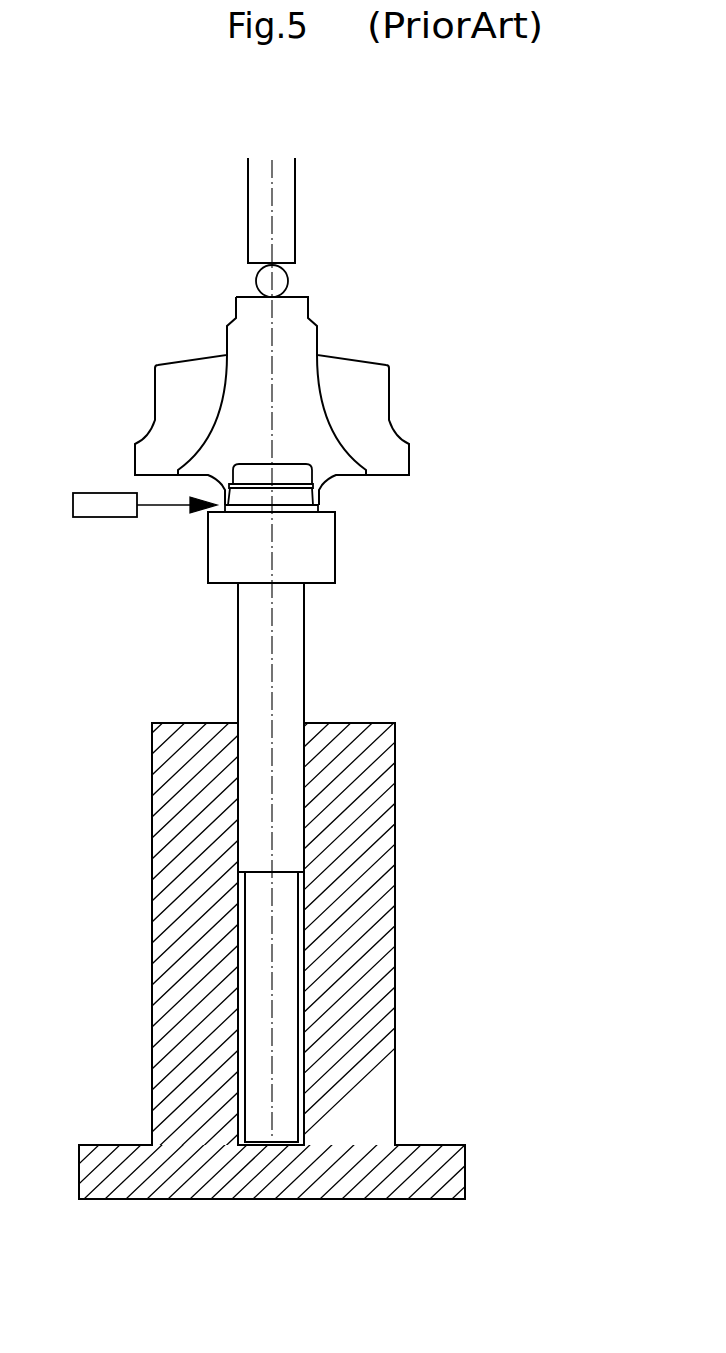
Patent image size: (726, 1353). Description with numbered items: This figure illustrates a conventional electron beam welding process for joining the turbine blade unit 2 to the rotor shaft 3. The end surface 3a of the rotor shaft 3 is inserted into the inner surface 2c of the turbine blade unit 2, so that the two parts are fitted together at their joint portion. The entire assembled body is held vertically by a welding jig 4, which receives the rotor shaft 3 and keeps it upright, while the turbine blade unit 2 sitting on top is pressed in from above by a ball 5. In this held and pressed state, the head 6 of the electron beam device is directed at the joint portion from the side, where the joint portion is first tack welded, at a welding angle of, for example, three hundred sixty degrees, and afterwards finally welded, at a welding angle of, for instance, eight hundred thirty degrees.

The impeller 2 is at (298, 363).
The impeller hub boss / nut 2c is at (244, 473).
The rotor shaft 3 is at (297, 617).
The shaft shoulder / nut 3a is at (300, 494).
The shaft holding jig 4 is at (173, 902).
The pressing ball 5 is at (265, 280).
The measuring device 6 is at (92, 509).